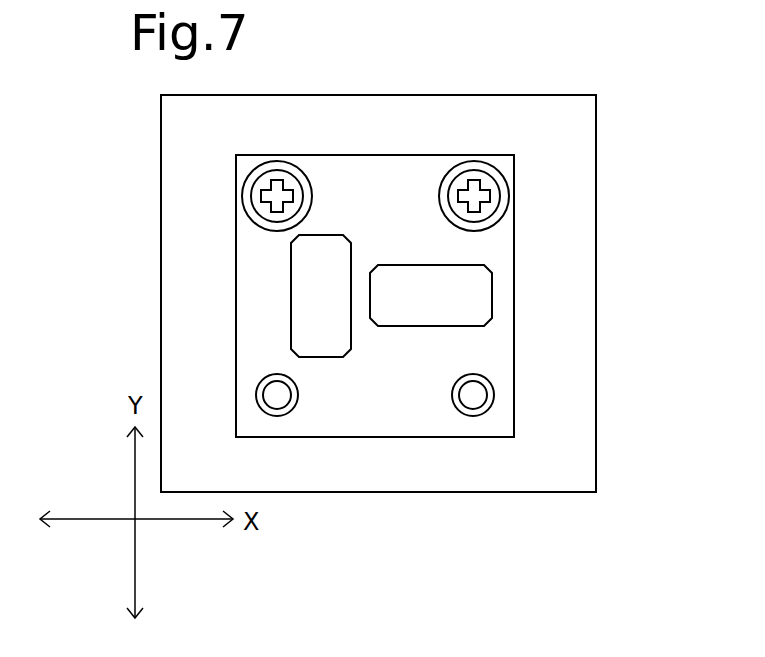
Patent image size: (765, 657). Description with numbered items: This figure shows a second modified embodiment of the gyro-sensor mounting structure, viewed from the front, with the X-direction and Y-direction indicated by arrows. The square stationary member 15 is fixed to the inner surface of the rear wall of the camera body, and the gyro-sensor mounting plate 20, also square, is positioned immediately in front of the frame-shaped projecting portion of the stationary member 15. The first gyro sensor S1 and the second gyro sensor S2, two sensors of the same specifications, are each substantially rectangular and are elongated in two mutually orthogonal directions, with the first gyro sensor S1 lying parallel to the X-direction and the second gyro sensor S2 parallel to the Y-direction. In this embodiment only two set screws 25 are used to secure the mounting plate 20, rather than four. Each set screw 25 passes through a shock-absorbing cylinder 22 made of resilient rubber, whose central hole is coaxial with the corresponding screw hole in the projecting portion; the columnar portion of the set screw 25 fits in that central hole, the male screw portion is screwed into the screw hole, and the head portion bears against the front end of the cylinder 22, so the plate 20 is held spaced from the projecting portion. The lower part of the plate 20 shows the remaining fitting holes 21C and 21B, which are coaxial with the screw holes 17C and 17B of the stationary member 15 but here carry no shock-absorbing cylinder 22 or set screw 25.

The stationary member 15 is at (550, 381).
The gyro-sensor mounting plate 20 is at (494, 336).
The shock-absorbing cylinder 22 is at (278, 167).
The set screw 25 is at (293, 196).
The first gyro sensor S1 is at (449, 307).
The second gyro sensor S2 is at (305, 290).
The fitting hole 21C is at (261, 414).
The screw hole 17C is at (292, 400).
The fitting hole 21B is at (471, 416).
The screw hole 17B is at (457, 393).